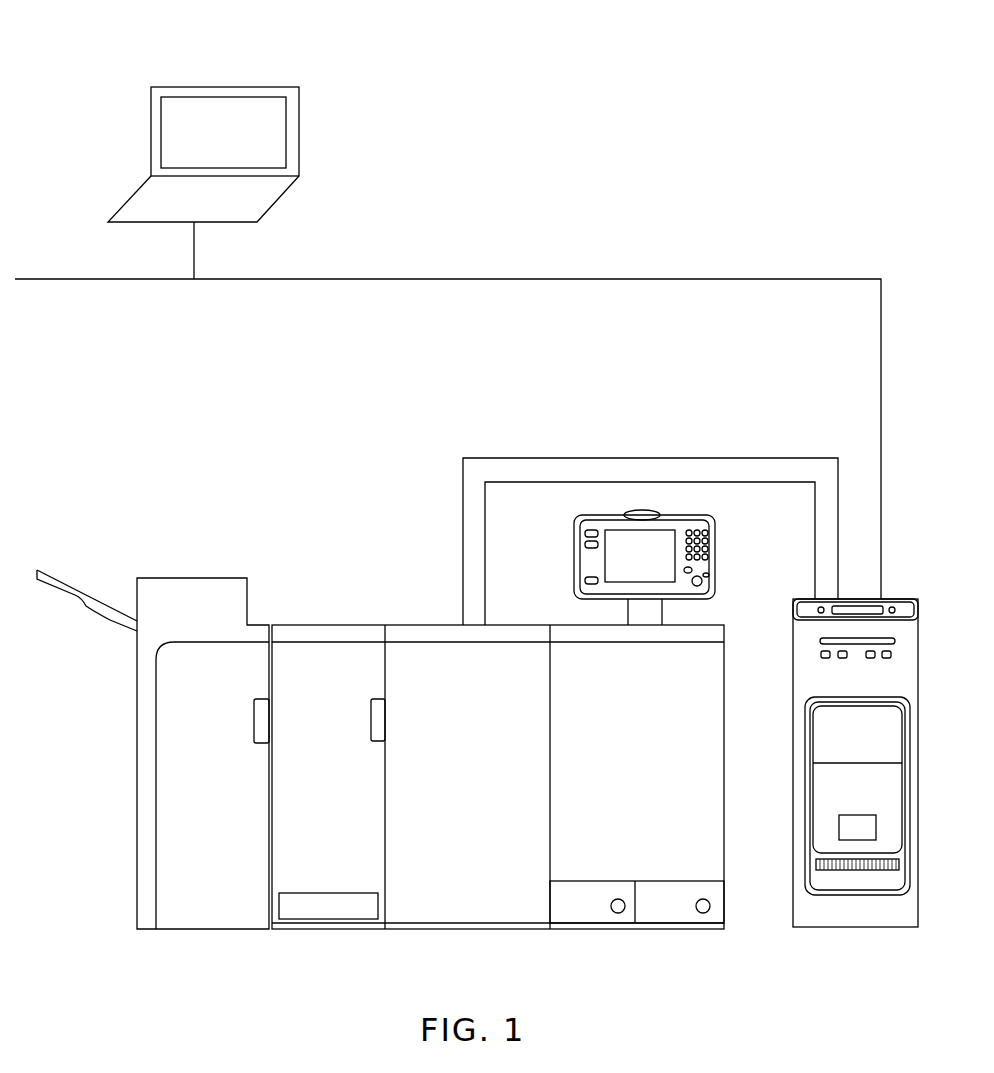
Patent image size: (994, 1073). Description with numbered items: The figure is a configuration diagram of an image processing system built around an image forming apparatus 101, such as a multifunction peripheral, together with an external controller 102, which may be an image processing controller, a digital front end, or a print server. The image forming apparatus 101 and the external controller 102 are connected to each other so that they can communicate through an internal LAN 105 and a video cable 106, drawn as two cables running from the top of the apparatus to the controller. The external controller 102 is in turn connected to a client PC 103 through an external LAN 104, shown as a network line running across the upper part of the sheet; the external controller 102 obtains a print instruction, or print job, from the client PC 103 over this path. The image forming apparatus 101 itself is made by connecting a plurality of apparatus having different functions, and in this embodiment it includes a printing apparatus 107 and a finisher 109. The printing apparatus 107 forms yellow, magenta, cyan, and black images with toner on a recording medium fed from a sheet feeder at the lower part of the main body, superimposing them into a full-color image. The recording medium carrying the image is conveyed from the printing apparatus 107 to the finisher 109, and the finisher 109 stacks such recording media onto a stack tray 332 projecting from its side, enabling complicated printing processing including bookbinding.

The image forming apparatus 101 is at (343, 563).
The external controller 102 is at (885, 599).
The client personal computer 103 is at (248, 87).
The external LAN 104 is at (672, 279).
The internal LAN 105 is at (753, 482).
The video cable 106 is at (793, 458).
The printing apparatus 107 is at (675, 930).
The finisher 109 is at (230, 930).
The stack tray 332 is at (52, 572).